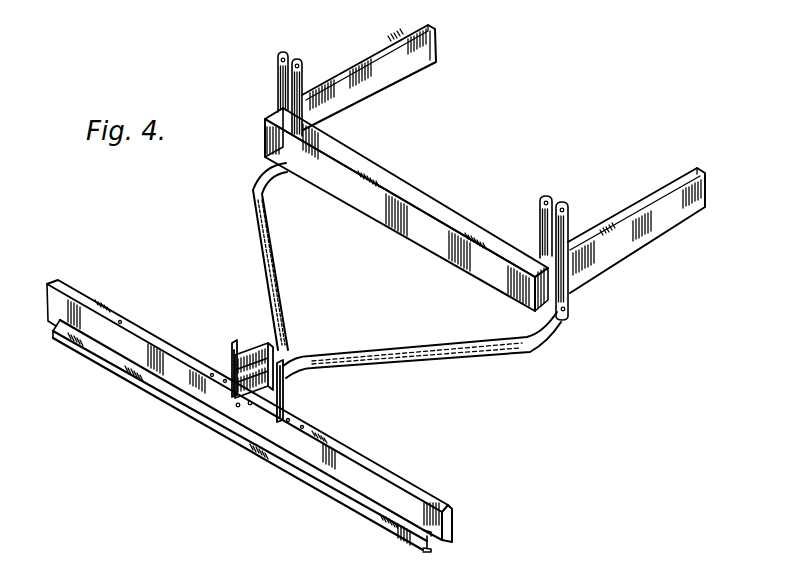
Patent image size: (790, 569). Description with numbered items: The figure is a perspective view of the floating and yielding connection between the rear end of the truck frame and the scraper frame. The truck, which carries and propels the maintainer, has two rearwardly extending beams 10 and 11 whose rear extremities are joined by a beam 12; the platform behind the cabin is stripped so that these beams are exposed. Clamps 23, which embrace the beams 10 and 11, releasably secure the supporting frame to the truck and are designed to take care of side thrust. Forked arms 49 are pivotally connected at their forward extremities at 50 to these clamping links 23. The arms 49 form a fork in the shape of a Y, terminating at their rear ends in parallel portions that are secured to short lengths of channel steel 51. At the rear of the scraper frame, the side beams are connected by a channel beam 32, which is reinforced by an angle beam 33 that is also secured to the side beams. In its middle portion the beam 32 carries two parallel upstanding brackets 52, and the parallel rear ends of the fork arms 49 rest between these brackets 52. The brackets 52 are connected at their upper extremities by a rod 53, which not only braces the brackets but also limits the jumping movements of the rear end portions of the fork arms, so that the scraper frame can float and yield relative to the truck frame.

The rearwardly extending beam 10 is at (347, 70).
The rearwardly extending beam 11 is at (640, 230).
The beam 12 is at (358, 197).
The clamp 23 is at (285, 98).
The channel beam 32 is at (352, 455).
The angle beam 33 is at (312, 480).
The arm 49 is at (265, 265).
The pivotal connection 50 is at (568, 316).
The short lengths of channel steel 51 is at (250, 405).
The upstanding bracket 52 is at (230, 360).
The rod 53 is at (240, 356).